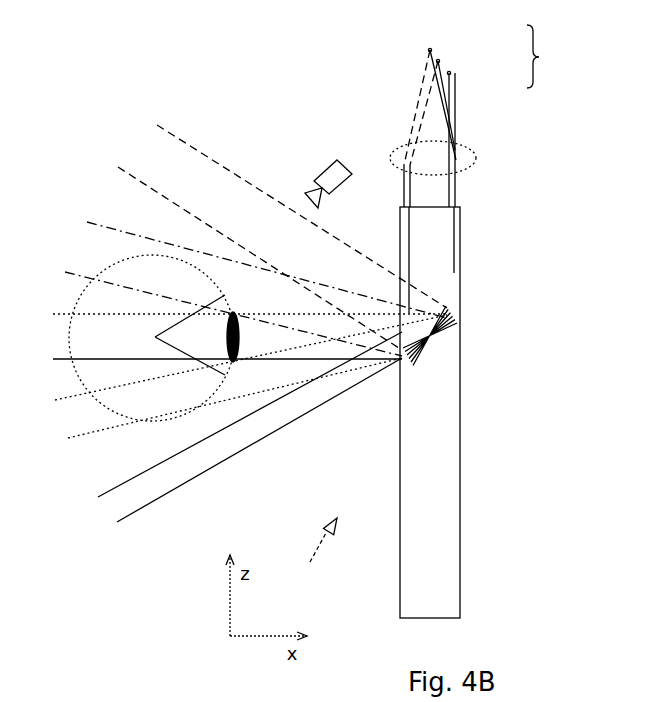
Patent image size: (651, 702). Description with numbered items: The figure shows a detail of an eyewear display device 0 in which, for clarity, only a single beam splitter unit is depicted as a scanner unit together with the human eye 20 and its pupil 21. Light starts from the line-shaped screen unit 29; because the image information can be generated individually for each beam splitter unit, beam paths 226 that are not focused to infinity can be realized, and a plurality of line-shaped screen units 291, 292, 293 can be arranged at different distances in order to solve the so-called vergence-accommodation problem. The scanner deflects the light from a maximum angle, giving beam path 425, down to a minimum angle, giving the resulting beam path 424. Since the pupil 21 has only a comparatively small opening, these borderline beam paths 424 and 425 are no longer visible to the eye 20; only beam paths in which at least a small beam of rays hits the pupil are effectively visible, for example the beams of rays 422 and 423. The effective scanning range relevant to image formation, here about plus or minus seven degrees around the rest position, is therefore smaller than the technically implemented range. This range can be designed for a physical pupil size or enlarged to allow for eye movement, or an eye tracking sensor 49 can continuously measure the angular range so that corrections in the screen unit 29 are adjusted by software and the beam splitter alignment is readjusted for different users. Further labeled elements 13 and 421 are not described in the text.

The eyewear display device 0 is at (317, 553).
The lens 13 is at (477, 153).
The eye 20 is at (155, 253).
The pupil 21 is at (228, 337).
The line-shaped screen unit 29 is at (546, 56).
The line-shaped screen unit 291 is at (432, 51).
The line-shaped screen unit 292 is at (440, 62).
The line-shaped screen unit 293 is at (451, 74).
The eye tracking sensor 49 is at (327, 167).
The beam path 226 is at (458, 188).
The first light beam 421 is at (55, 316).
The beam of rays 422 is at (75, 273).
The beam of rays 423 is at (112, 430).
The beam path 424 is at (203, 481).
The beam path 425 is at (175, 137).